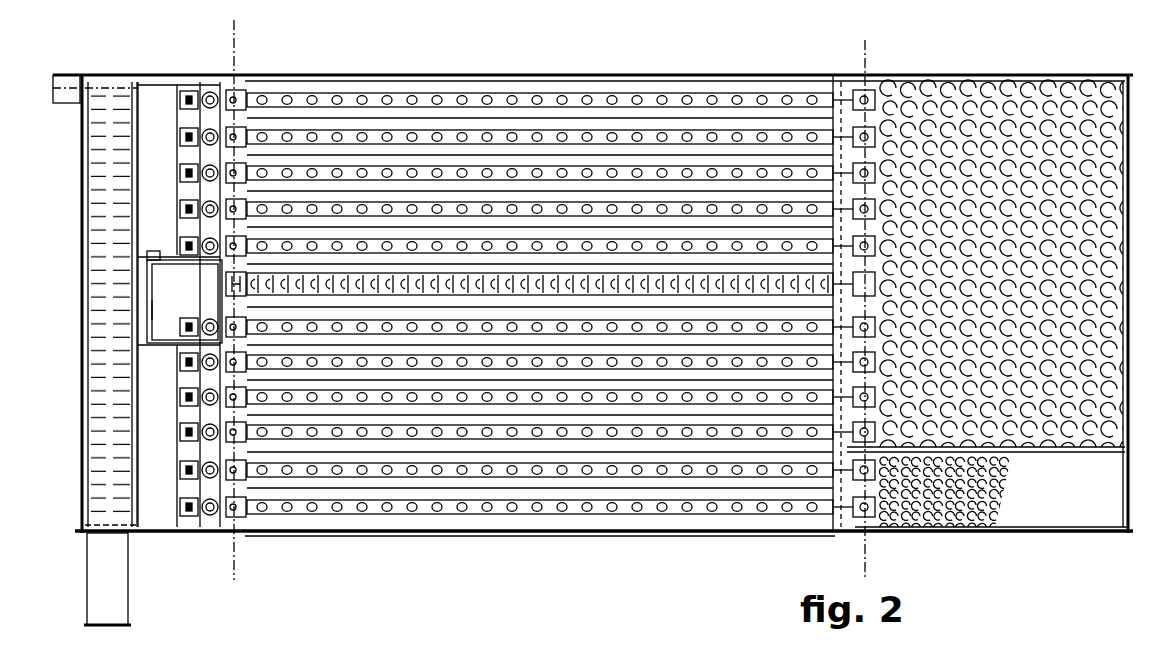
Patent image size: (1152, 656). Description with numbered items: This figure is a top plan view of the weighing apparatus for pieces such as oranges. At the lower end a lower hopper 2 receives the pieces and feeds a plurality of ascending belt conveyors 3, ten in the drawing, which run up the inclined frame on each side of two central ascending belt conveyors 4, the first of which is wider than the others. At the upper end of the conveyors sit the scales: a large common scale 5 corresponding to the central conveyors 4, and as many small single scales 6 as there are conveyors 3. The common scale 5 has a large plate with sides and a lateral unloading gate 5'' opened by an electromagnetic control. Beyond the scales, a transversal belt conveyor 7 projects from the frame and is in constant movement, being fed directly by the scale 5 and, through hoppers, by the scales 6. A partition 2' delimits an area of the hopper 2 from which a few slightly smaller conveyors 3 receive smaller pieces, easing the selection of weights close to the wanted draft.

The lower hopper 2 is at (1000, 228).
The partition 2' is at (992, 516).
The ascending belt conveyors 3 is at (528, 98).
The ascending belt conveyor 4 is at (350, 283).
The large scale 5 is at (183, 269).
The lateral unloading gate 5'' is at (99, 321).
The small scales 6 is at (182, 94).
The transversal belt conveyor 7 is at (103, 455).